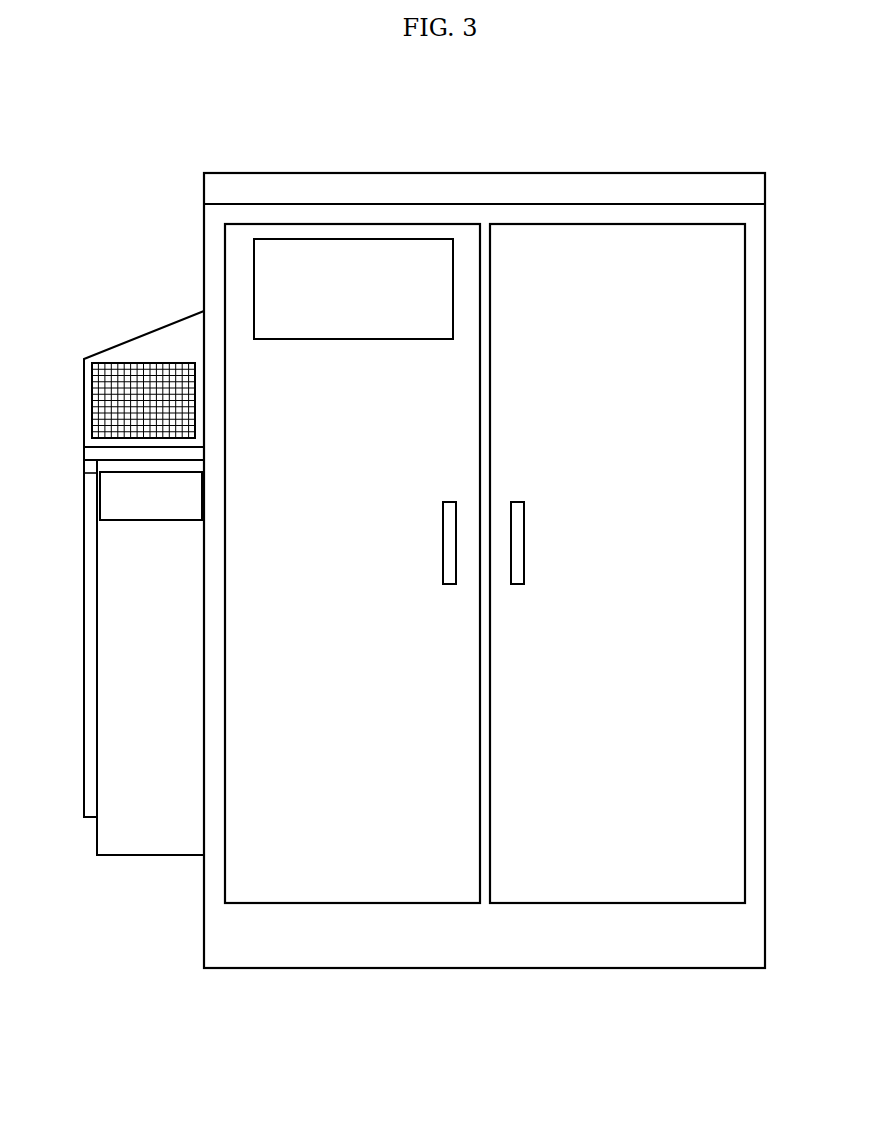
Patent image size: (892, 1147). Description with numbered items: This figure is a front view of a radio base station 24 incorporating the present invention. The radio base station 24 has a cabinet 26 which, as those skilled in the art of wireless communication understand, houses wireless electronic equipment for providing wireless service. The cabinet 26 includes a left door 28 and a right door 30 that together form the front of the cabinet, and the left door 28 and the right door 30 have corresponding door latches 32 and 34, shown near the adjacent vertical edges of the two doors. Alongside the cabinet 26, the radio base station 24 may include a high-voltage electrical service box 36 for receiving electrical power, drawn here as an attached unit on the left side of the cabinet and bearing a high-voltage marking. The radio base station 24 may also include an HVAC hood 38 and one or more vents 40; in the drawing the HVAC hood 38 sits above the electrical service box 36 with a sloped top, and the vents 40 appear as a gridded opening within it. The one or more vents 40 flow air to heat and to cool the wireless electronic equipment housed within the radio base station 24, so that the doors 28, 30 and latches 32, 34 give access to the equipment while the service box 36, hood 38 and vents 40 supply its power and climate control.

The radio base station 24 is at (140, 133).
The cabinet 26 is at (742, 183).
The left door 28 is at (367, 885).
The right door 30 is at (595, 882).
The door latch 32 is at (448, 567).
The door latch 34 is at (515, 567).
The high-voltage electrical service box 36 is at (123, 538).
The HVAC hood 38 is at (166, 337).
The vents 40 is at (98, 397).